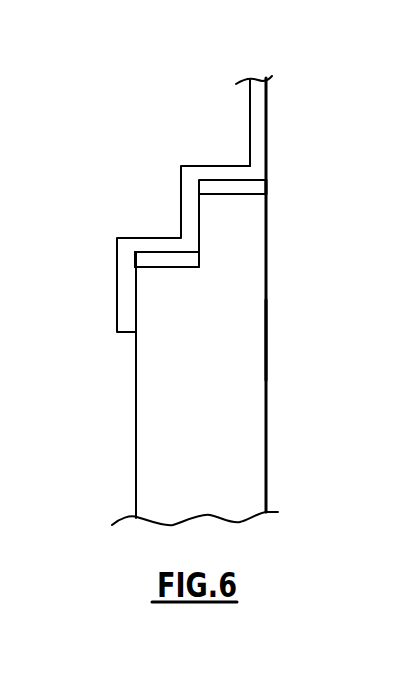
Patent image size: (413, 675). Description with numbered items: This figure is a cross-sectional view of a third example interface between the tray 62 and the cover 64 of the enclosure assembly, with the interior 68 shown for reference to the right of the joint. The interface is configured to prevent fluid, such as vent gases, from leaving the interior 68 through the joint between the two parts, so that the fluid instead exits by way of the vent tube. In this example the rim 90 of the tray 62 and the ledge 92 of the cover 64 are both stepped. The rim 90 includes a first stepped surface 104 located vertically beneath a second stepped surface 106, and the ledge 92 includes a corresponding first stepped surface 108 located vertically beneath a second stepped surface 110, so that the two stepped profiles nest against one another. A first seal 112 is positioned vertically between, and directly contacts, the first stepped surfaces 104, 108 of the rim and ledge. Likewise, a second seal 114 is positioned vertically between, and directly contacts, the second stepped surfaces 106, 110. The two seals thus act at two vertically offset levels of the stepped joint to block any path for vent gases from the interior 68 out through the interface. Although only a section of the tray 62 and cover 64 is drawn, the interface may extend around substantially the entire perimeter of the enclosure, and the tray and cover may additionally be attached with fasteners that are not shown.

The tray 62 is at (108, 480).
The cover 64 is at (200, 92).
The interior 68 is at (341, 346).
The rim 90 is at (206, 290).
The ledge 92 is at (164, 136).
The first stepped surface 104 is at (145, 267).
The second stepped surface 106 is at (240, 194).
The first stepped surface 108 is at (162, 252).
The second stepped surface 110 is at (232, 180).
The first seal 112 is at (147, 260).
The second seal 114 is at (252, 187).